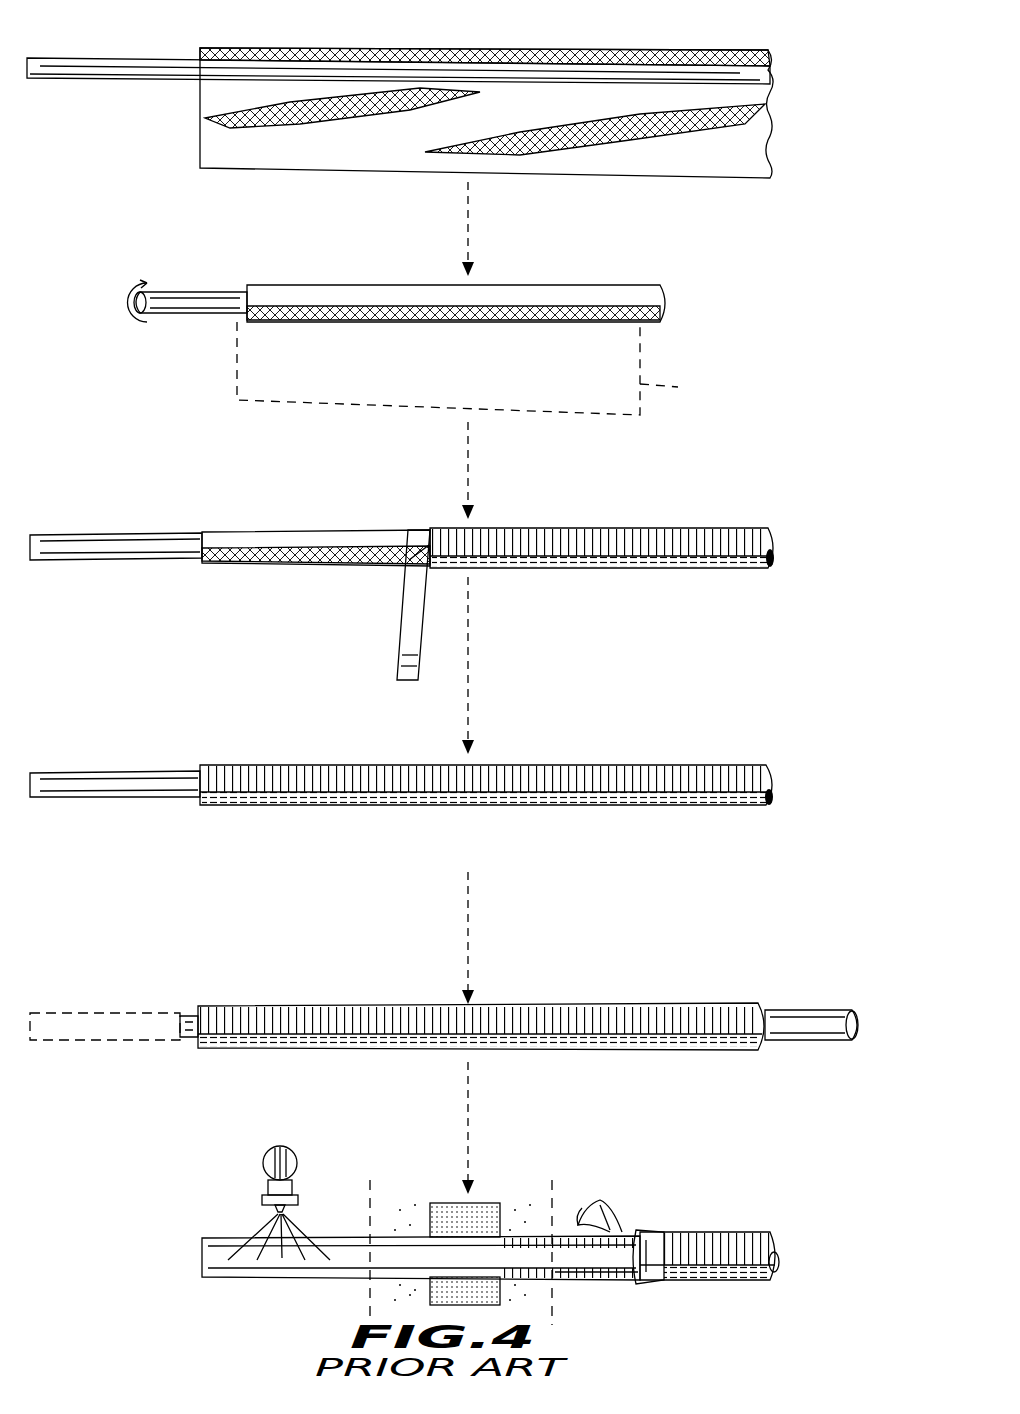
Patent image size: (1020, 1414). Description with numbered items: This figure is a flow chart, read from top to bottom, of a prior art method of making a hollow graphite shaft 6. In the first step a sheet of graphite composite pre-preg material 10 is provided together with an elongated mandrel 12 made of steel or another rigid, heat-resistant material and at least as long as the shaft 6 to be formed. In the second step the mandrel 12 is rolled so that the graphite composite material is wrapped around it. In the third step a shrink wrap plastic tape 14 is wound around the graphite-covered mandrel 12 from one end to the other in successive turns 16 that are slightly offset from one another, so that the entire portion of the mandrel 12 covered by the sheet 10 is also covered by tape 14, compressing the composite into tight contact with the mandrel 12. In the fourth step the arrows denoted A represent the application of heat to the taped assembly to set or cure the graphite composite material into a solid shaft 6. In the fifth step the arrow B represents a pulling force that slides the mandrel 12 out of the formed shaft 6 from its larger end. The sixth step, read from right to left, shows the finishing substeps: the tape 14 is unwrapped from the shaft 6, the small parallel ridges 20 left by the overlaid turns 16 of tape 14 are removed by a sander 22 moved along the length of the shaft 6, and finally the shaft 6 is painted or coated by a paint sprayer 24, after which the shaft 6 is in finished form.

The graphite shaft 6 is at (345, 1262).
The graphite composite sheet 10 is at (745, 160).
The mandrel 12 is at (140, 47).
The shrink wrap plastic tape 14 is at (408, 590).
The turns of tape 16 is at (648, 528).
The parallel ridges 20 is at (590, 1280).
The sander 22 is at (492, 1203).
The paint sprayer 24 is at (263, 1162).
The heat application arrows A is at (677, 856).
The pulling force arrow B is at (862, 1025).